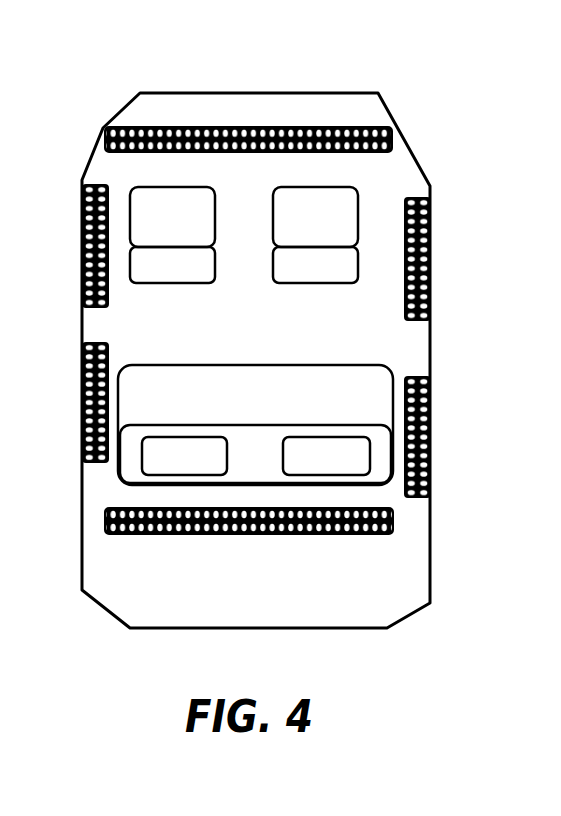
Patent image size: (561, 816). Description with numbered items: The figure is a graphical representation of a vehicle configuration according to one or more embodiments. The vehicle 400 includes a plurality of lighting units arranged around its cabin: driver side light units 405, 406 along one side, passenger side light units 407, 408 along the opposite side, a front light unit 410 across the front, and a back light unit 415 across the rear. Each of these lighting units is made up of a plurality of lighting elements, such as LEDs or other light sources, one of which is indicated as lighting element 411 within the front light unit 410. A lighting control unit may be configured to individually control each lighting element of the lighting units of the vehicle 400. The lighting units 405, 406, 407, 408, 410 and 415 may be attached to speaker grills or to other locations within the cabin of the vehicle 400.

The vehicle 400 is at (168, 59).
The driver side light unit 405 is at (84, 258).
The driver side light unit 406 is at (84, 395).
The passenger side light unit 407 is at (430, 250).
The passenger side light unit 408 is at (430, 427).
The front light unit 410 is at (284, 127).
The lighting element 411 is at (393, 136).
The back light unit 415 is at (303, 535).